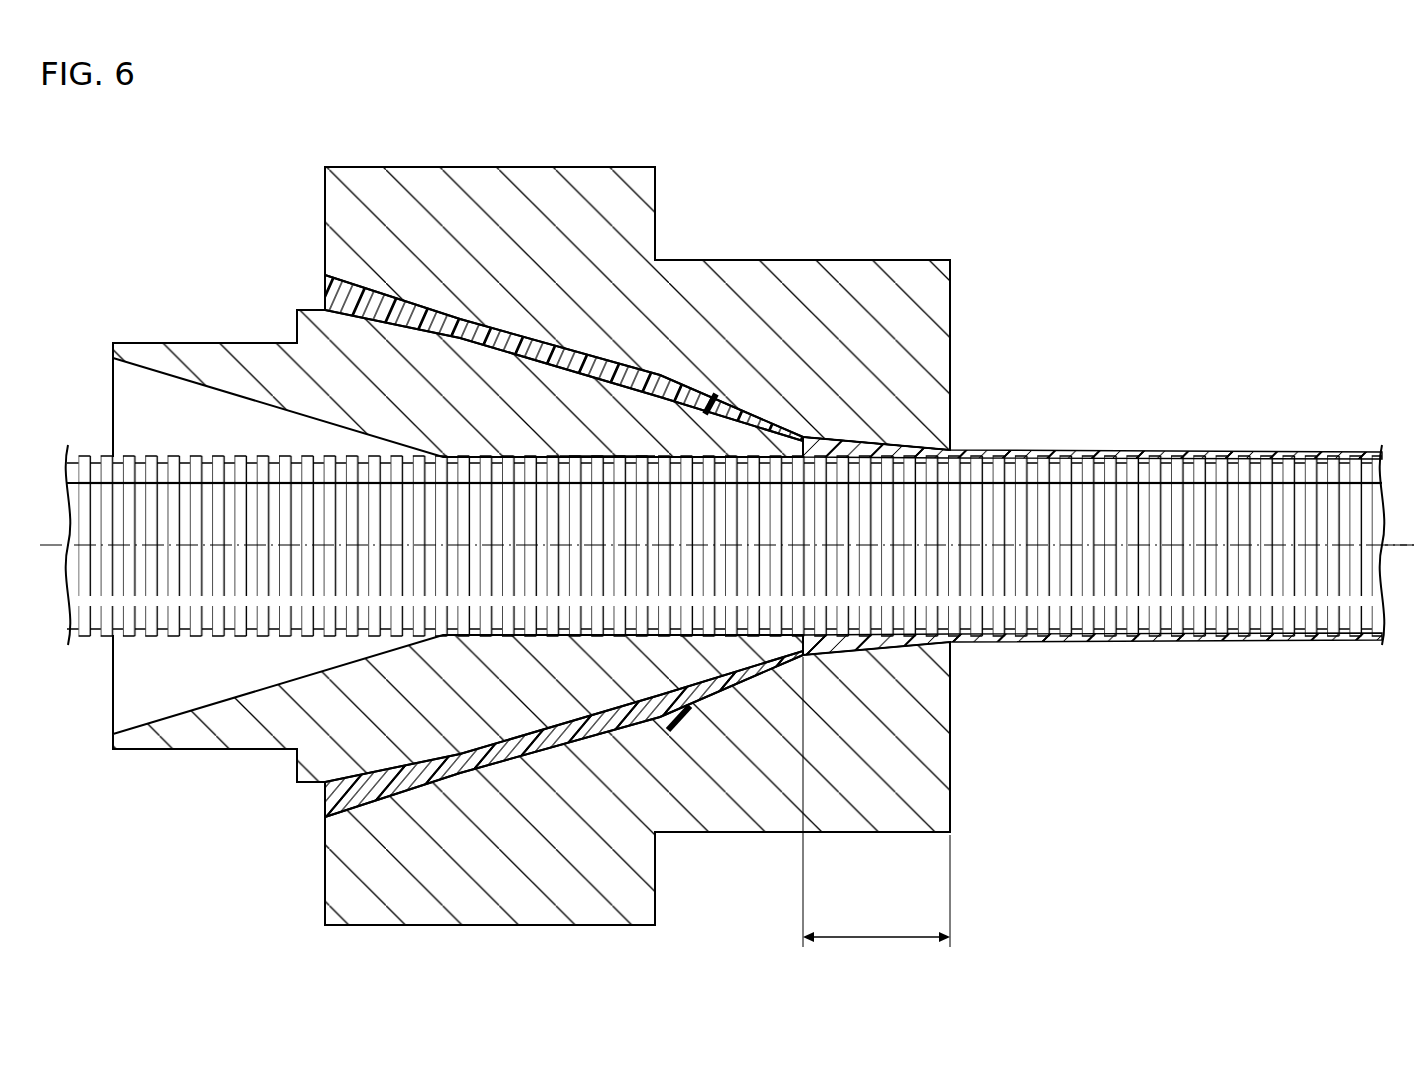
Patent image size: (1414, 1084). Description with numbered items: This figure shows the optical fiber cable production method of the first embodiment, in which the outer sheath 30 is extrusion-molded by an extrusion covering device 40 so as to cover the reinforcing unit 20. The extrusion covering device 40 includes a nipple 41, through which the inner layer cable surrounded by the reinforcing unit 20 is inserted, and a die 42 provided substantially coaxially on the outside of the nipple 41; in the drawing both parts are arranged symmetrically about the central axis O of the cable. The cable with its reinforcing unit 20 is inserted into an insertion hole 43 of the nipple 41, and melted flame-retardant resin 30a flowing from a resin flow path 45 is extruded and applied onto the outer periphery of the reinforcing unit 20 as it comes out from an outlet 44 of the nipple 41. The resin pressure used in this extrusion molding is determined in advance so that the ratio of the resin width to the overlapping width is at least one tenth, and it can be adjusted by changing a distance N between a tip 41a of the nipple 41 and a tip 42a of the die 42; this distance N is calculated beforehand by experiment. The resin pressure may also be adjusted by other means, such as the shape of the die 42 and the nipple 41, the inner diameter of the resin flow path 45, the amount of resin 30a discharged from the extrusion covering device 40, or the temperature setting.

The reinforcing unit 20 is at (1160, 624).
The outer sheath 30 is at (1276, 453).
The flame-retardant resin 30a is at (526, 336).
The extrusion covering device 40 is at (976, 176).
The nipple 41 is at (227, 357).
The tip of the nipple 41a is at (803, 653).
The die 42 is at (814, 266).
The tip of the die 42a is at (950, 334).
The insertion hole 43 is at (563, 460).
The outlet 44 is at (824, 446).
The resin flow path 45 is at (706, 398).
The distance N is at (876, 802).
The axis O is at (1402, 543).